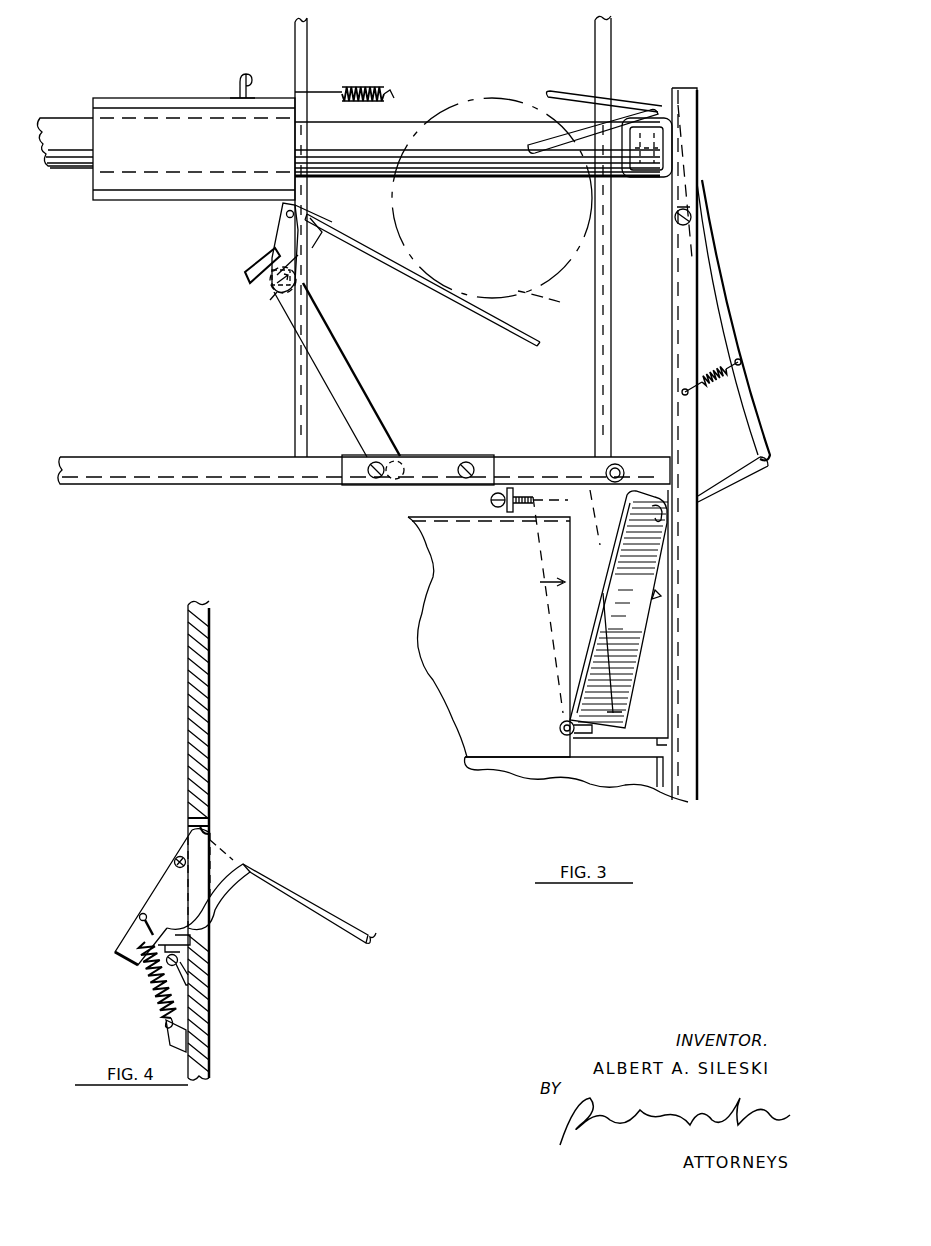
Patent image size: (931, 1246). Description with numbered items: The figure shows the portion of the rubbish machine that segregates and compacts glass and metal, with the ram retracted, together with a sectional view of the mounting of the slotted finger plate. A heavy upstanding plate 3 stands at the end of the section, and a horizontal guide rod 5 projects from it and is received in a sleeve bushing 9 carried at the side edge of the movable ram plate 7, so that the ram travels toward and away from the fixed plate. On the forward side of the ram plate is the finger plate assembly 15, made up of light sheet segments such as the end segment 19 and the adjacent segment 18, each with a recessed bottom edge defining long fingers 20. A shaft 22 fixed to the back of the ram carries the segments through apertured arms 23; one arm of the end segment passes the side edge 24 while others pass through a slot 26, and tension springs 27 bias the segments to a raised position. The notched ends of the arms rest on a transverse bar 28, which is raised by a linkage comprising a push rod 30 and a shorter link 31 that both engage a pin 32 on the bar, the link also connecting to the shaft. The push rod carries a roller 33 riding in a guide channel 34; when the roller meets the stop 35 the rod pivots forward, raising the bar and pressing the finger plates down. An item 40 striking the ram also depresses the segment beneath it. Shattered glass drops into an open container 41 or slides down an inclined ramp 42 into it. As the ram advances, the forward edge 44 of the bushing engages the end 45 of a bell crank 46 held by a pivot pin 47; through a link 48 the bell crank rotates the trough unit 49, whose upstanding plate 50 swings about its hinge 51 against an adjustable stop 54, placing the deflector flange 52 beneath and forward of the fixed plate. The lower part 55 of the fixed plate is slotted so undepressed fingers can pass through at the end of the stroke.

In FIG. 3, the upstanding plate 3 is at (606, 45).
In FIG. 3, the guide rod 5 is at (64, 125).
In FIG. 3, the ram plate 7 is at (302, 40).
In FIG. 4, the ram plate 7 is at (188, 694).
In FIG. 3, the sleeve bushing 9 is at (118, 98).
In FIG. 3, the finger plate assembly 15 is at (443, 302).
In FIG. 4, the finger plate assembly 15 is at (340, 900).
In FIG. 4, the finger plate segment 18 is at (270, 880).
In FIG. 3, the end finger plate segment 19 is at (495, 300).
In FIG. 4, the fingers 20 is at (372, 935).
In FIG. 3, the shaft 22 is at (280, 210).
In FIG. 4, the shaft 22 is at (178, 855).
In FIG. 3, the arm 23 is at (310, 232).
In FIG. 4, the arm 23 is at (165, 885).
In FIG. 3, the side edge 24 is at (300, 52).
In FIG. 4, the slot 26 is at (210, 828).
In FIG. 4, the tension spring 27 is at (155, 1000).
In FIG. 3, the transverse bar 28 is at (280, 308).
In FIG. 4, the transverse bar 28 is at (148, 925).
In FIG. 3, the push rod 30 is at (348, 390).
In FIG. 3, the link 31 is at (298, 218).
In FIG. 3, the pin 32 is at (267, 287).
In FIG. 4, the pin 32 is at (192, 985).
In FIG. 3, the roller 33 is at (399, 455).
In FIG. 3, the guide channel 34 is at (425, 460).
In FIG. 3, the stop 35 is at (482, 460).
In FIG. 3, the article of rubbish 40 is at (488, 98).
In FIG. 3, the open container 41 is at (593, 768).
In FIG. 3, the inclined ramp 42 is at (448, 680).
In FIG. 3, the forward edge 44 is at (300, 108).
In FIG. 3, the end of bell crank 45 is at (526, 145).
In FIG. 3, the bell crank 46 is at (708, 215).
In FIG. 3, the pivot pin 47 is at (690, 222).
In FIG. 3, the link 48 is at (728, 478).
In FIG. 3, the trough unit 49 is at (540, 585).
In FIG. 3, the upstanding plate 50 is at (548, 658).
In FIG. 3, the hinge 51 is at (558, 730).
In FIG. 3, the flange 52 is at (632, 665).
In FIG. 3, the adjustable stop 54 is at (520, 510).
In FIG. 3, the slotted lower part 55 is at (605, 406).